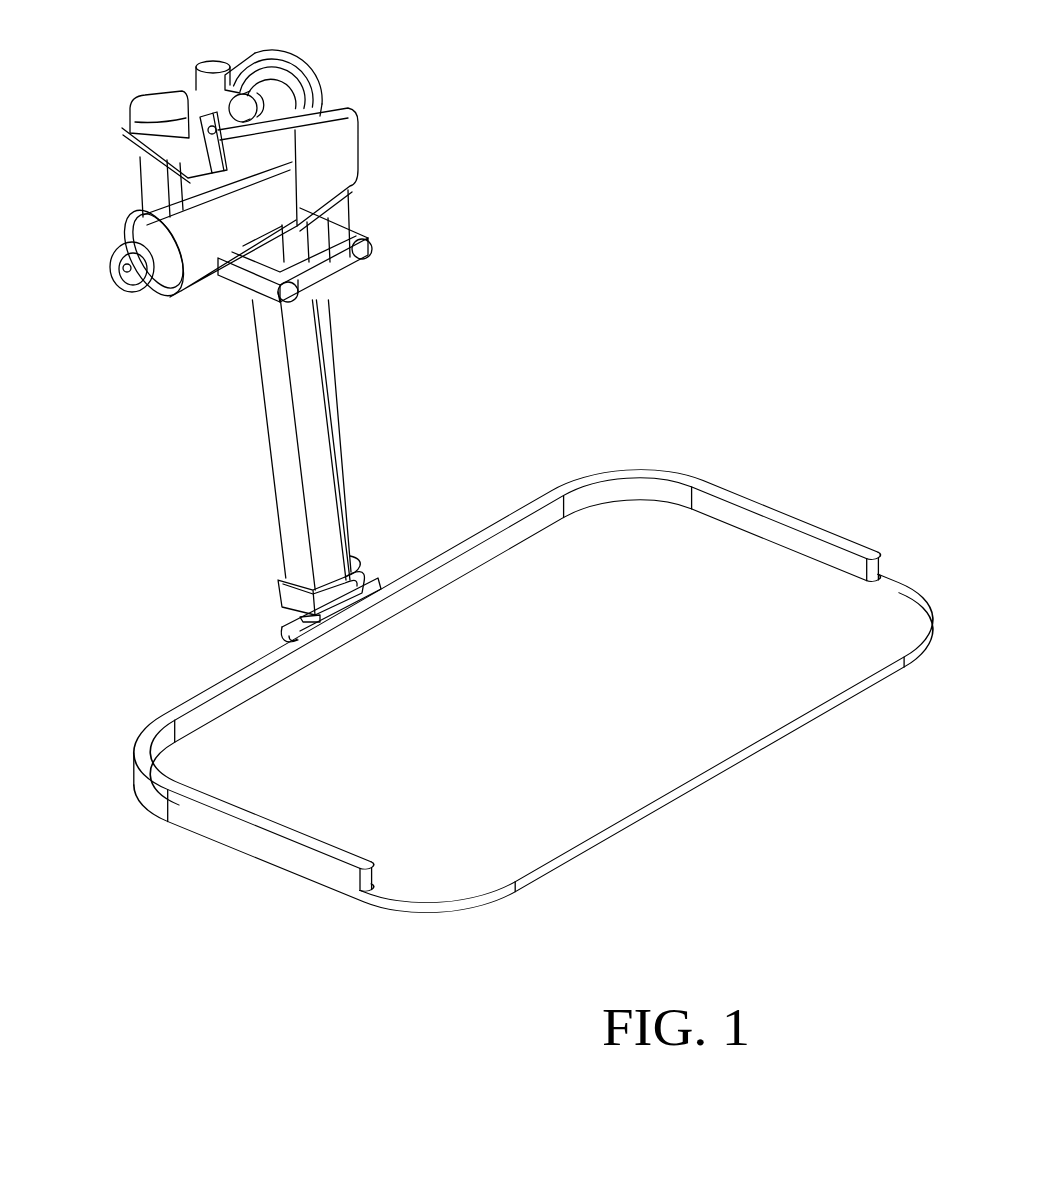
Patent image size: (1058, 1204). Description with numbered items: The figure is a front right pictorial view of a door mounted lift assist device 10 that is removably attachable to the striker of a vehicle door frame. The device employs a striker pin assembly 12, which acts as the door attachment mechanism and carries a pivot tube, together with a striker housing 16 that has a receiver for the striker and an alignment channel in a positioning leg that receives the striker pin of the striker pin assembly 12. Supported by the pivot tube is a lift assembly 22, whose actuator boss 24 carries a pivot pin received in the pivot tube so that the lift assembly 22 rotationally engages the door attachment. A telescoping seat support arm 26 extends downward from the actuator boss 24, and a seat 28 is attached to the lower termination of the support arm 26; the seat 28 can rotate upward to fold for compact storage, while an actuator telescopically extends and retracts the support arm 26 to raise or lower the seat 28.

The lift assist device 10 is at (596, 152).
The striker pin assembly 12 is at (163, 74).
The striker housing 16 is at (118, 176).
The lift assembly 22 is at (238, 447).
The actuator boss 24 is at (349, 232).
The telescoping seat support arm 26 is at (335, 438).
The seat 28 is at (783, 625).